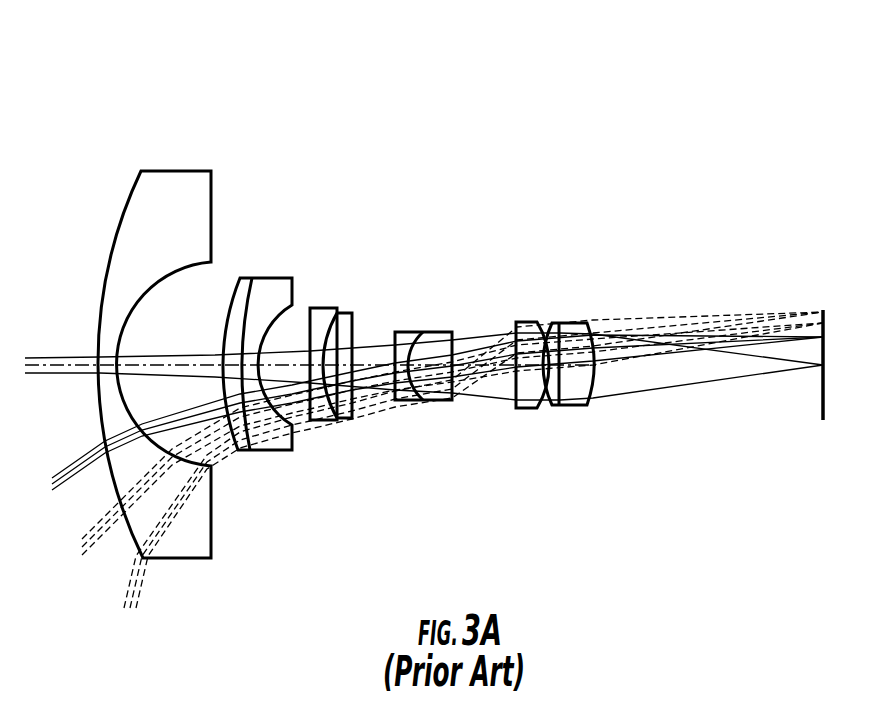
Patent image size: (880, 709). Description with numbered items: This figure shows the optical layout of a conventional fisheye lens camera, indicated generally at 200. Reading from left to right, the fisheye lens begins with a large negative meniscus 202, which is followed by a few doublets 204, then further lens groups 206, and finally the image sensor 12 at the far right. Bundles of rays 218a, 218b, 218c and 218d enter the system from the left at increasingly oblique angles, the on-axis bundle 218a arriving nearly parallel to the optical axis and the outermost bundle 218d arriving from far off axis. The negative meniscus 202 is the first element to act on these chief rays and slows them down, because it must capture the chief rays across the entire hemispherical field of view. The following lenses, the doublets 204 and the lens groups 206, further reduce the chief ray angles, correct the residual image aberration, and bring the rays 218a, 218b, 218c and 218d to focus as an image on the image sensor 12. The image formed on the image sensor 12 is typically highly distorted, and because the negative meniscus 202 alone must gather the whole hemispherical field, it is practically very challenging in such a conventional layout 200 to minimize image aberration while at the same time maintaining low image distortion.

The optical layout of a conventional fisheye lens 200 is at (149, 56).
The negative meniscus 202 is at (198, 170).
The doublets 204 is at (402, 332).
The lens groups 206 is at (599, 308).
The image sensor 12 is at (826, 343).
The on-axis ray bundle 218a is at (62, 358).
The first off-axis ray bundle 218b is at (58, 471).
The second off-axis ray bundle 218c is at (82, 525).
The third off-axis ray bundle 218d is at (118, 580).